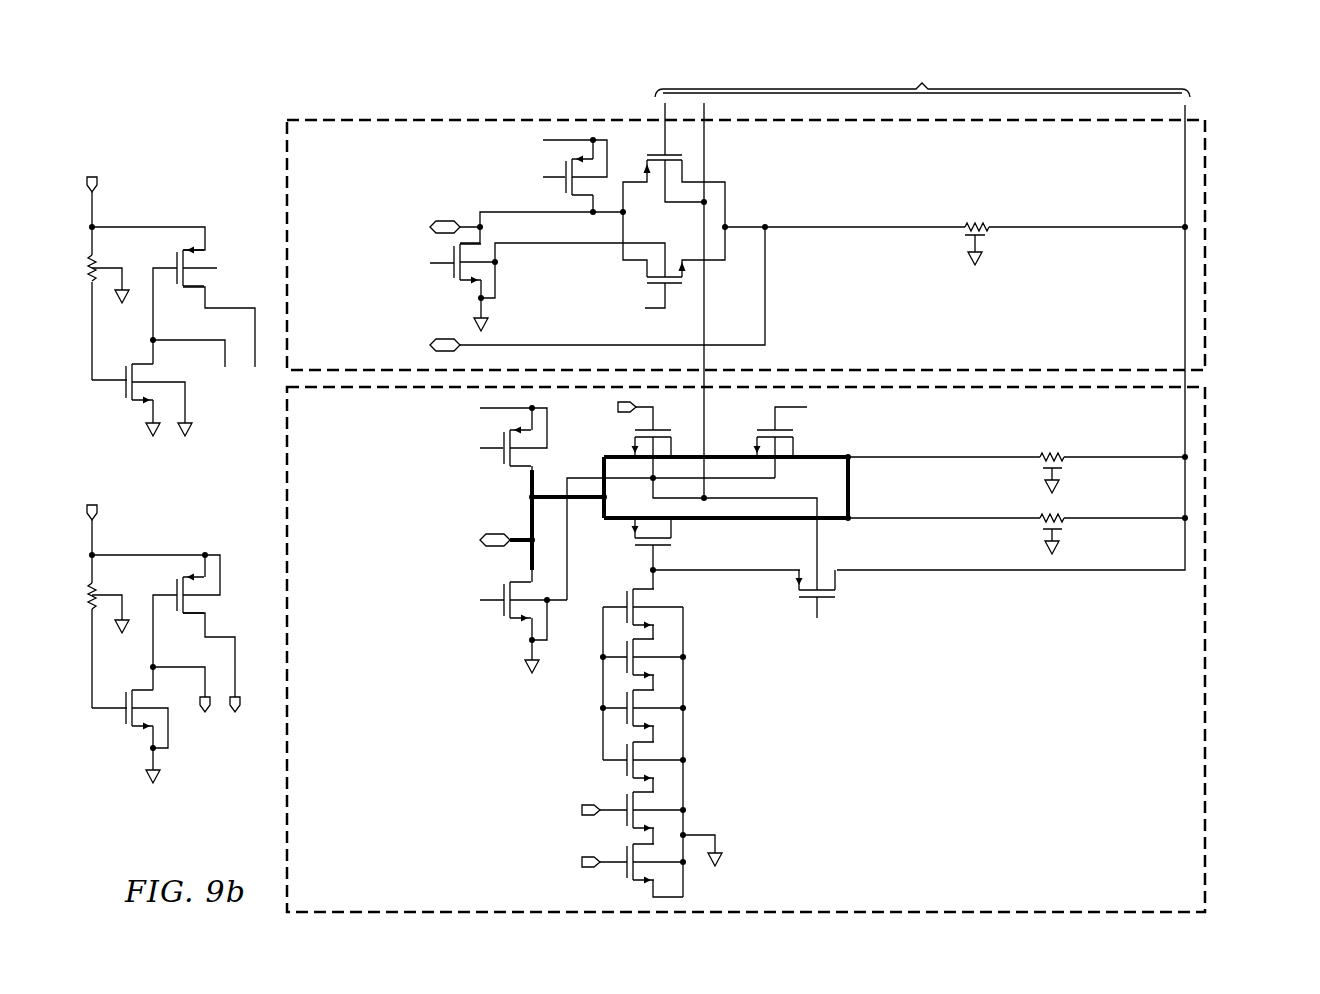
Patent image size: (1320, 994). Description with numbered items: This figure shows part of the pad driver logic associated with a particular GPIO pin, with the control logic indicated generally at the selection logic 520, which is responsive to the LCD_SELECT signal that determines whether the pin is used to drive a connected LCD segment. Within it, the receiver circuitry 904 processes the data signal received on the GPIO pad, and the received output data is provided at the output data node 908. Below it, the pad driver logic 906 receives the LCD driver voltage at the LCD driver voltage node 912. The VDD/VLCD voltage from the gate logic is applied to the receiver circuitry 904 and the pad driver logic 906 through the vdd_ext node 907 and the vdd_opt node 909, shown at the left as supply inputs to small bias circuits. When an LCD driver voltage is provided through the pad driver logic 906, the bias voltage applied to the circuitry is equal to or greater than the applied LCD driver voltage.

The selection logic 520 is at (1234, 109).
The receiver circuitry 904 is at (1206, 198).
The pad driver logic 906 is at (1208, 696).
The vdd_ext node 907 is at (104, 182).
The output data node 908 is at (445, 223).
The vdd_opt node 909 is at (99, 512).
The LCD driver voltage node 912 is at (495, 535).